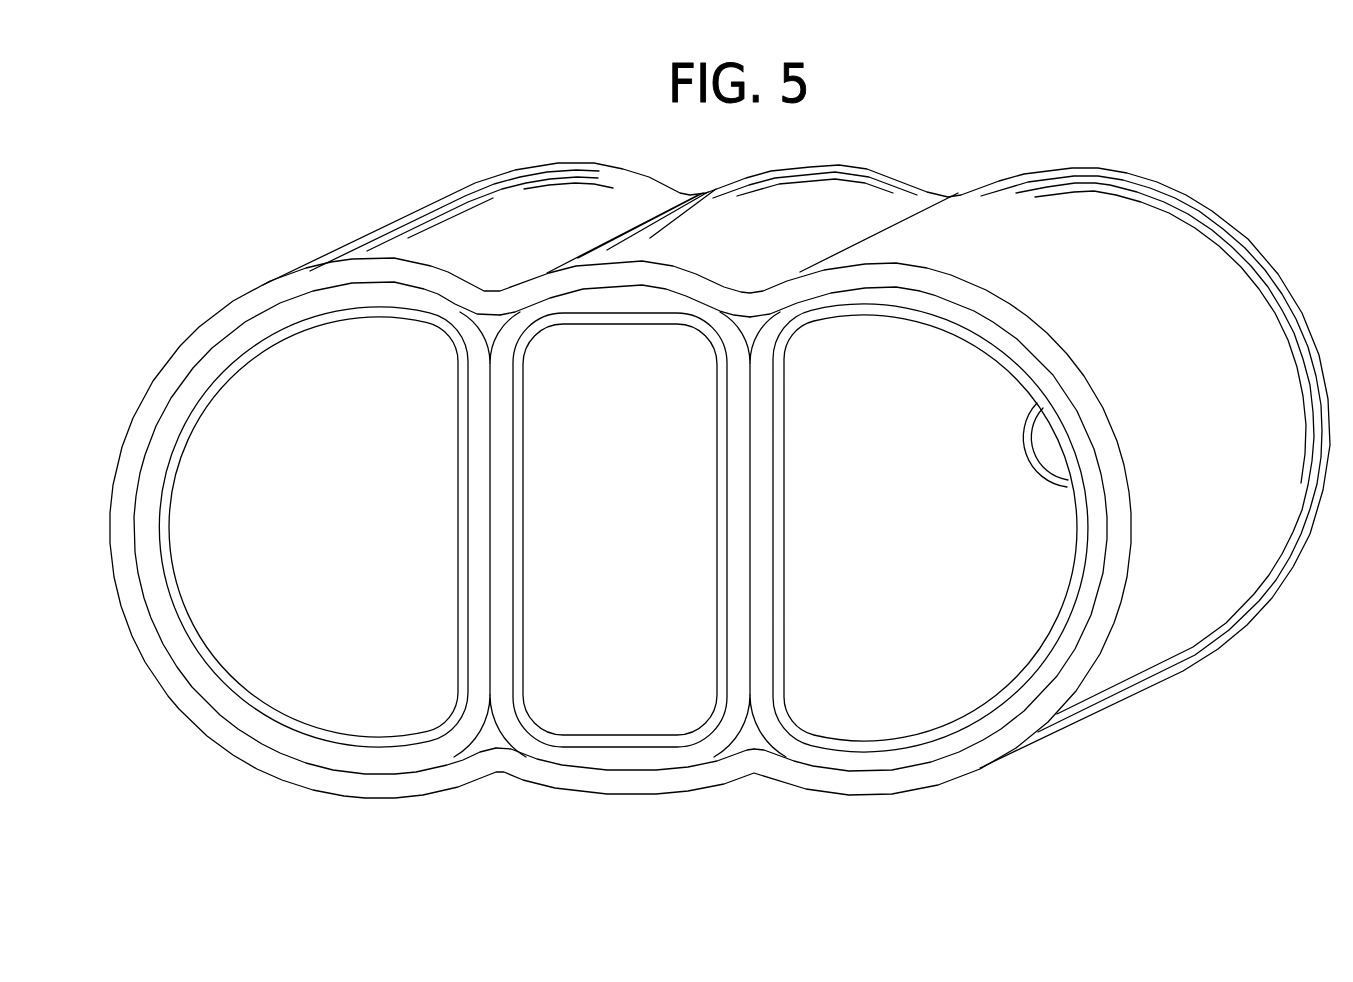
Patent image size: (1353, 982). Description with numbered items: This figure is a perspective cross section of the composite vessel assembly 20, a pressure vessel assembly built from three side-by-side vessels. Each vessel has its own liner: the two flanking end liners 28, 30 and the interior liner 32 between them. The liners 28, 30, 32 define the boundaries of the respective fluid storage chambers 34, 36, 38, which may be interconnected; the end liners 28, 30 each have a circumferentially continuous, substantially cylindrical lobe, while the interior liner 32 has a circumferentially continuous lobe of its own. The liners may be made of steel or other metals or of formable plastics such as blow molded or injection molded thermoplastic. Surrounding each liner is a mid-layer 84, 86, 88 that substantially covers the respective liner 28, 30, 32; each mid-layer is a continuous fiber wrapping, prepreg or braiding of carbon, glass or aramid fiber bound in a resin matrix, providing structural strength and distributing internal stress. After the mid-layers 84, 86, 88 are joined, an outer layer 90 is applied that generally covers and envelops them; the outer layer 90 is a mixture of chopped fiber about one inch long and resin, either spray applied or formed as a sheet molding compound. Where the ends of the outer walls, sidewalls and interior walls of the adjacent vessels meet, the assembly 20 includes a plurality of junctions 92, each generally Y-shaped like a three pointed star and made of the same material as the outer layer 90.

The composite vessel assembly 20 is at (720, 468).
The liner 28 is at (284, 713).
The liner 30 is at (832, 735).
The liner 32 is at (563, 735).
The chamber 34 is at (372, 624).
The chamber 36 is at (954, 642).
The chamber 38 is at (670, 630).
The mid-layer 84 is at (310, 755).
The mid-layer 86 is at (920, 760).
The mid-layer 88 is at (637, 760).
The outer layer 90 is at (387, 797).
The junction 92 is at (487, 327).